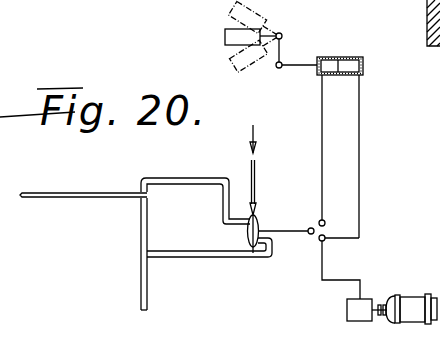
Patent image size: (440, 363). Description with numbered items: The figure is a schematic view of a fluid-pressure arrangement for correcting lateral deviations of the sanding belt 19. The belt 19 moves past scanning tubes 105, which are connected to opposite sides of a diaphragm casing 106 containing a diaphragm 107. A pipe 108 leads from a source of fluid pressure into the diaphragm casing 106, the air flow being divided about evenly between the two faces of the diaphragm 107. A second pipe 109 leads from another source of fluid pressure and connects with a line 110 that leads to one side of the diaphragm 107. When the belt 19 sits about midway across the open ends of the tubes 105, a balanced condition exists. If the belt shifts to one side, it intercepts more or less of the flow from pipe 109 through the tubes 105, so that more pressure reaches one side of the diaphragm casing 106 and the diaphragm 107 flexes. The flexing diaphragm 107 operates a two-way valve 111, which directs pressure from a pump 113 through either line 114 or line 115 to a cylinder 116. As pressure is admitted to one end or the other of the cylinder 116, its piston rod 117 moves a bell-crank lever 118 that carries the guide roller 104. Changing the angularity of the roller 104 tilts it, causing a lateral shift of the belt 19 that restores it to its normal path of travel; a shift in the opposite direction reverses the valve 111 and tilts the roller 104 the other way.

The sanding belt 19 is at (78, 192).
The guide roller 104 is at (225, 33).
The scanning tubes 105 is at (141, 207).
The diaphragm casing 106 is at (248, 227).
The diaphragm 107 is at (248, 235).
The pipe 108 is at (266, 164).
The pipe 109 is at (141, 279).
The line 110 is at (202, 257).
The two-way valve 111 is at (315, 235).
The pump 113 is at (363, 313).
The line 114 is at (358, 112).
The line 115 is at (322, 118).
The cylinder 116 is at (362, 44).
The piston rod 117 is at (301, 67).
The bell-crank lever 118 is at (283, 34).